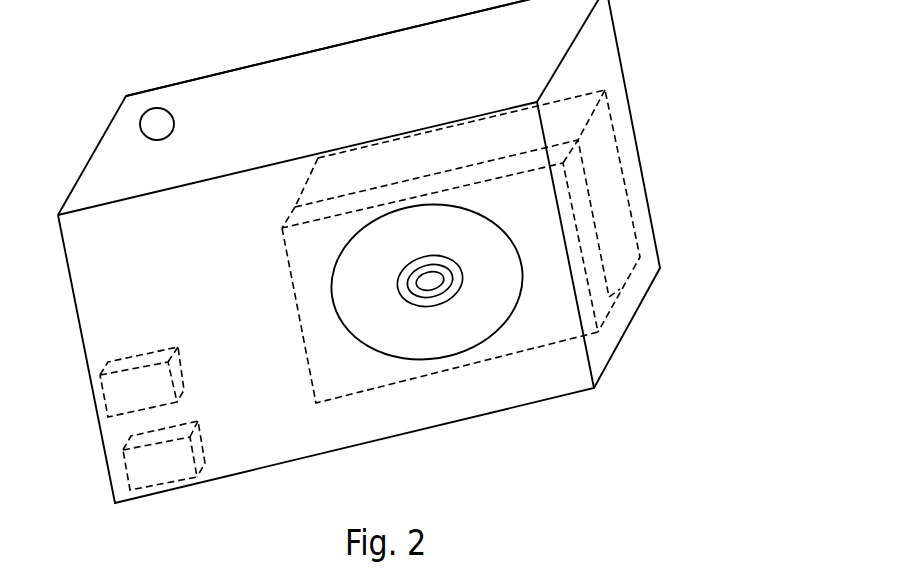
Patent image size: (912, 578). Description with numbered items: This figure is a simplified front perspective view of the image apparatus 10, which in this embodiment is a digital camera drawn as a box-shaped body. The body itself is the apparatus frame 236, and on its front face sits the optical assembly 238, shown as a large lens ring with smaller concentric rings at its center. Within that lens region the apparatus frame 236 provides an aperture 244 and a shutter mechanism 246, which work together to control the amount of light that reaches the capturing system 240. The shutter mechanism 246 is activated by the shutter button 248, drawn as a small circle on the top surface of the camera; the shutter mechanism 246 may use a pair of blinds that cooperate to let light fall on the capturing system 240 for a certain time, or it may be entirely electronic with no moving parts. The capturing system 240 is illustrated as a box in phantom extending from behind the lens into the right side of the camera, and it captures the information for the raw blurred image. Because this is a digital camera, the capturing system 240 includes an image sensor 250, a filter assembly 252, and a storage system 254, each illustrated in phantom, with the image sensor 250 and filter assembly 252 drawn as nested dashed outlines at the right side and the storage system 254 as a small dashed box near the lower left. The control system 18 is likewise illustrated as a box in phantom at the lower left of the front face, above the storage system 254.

The image apparatus 10 is at (356, 251).
The control system 18 is at (106, 397).
The apparatus frame 236 is at (330, 48).
The optical assembly 238 is at (441, 348).
The capturing system 240 is at (548, 246).
The aperture 244 is at (483, 362).
The shutter mechanism 246 is at (458, 381).
The shutter button 248 is at (171, 70).
The image sensor 250 is at (748, 315).
The filter assembly 252 is at (514, 271).
The storage system 254 is at (124, 469).